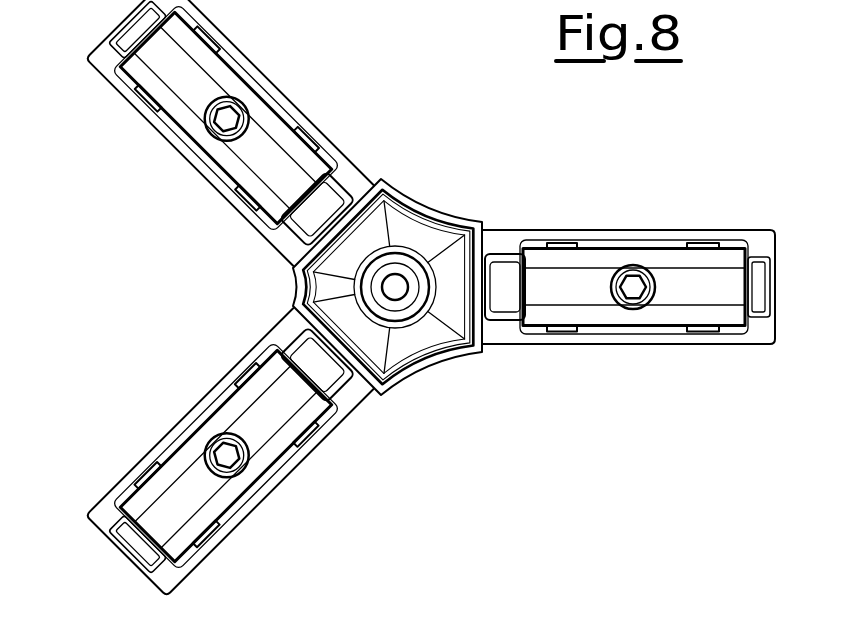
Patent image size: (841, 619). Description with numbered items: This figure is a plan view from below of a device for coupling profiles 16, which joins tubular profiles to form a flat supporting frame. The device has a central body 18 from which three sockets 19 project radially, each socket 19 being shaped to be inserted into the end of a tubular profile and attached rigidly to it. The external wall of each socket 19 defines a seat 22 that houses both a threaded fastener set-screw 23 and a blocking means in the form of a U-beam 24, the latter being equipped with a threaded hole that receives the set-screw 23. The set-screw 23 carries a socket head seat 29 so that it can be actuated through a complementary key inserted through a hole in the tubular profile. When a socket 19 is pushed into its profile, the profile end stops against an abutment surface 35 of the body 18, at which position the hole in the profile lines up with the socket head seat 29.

The device for coupling profiles 16 is at (412, 298).
The body 18 is at (421, 218).
The socket 19 is at (98, 62).
The seat 22 is at (320, 203).
The threaded fastener set-screw 23 is at (250, 73).
The U-beam 24 is at (292, 143).
The socket head seat 29 is at (228, 118).
The abutment surface 35 is at (455, 226).